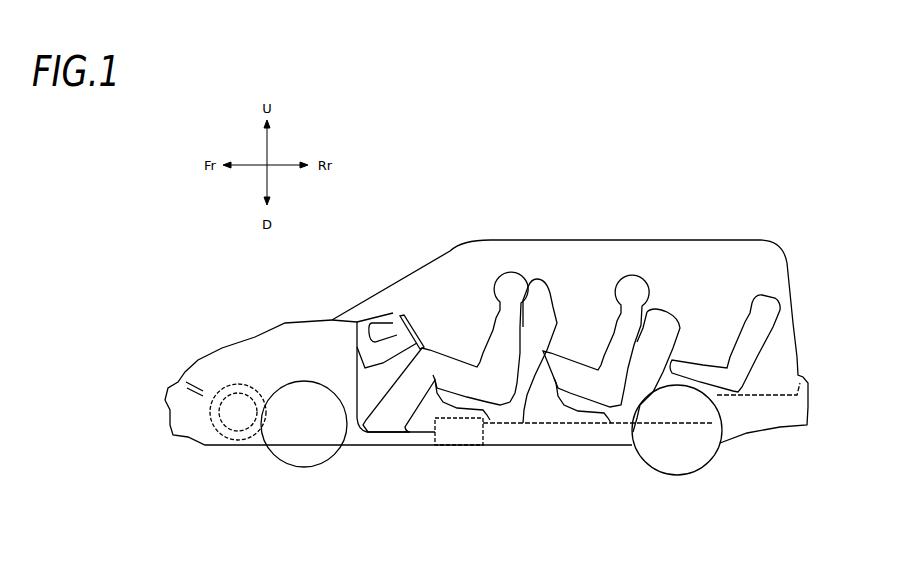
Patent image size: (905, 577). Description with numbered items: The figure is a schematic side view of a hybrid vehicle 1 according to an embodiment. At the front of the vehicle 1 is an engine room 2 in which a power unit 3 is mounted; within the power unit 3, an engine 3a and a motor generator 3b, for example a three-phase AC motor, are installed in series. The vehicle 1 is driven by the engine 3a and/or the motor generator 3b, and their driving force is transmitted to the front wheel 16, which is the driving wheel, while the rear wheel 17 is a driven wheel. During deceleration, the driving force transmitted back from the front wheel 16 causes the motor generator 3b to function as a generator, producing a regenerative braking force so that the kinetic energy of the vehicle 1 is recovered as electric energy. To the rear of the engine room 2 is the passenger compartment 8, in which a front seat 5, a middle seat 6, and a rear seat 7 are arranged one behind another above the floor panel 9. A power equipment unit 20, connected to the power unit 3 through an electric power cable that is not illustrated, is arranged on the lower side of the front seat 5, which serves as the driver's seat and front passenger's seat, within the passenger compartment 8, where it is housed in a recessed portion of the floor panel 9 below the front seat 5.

The vehicle 1 is at (548, 190).
The engine room 2 is at (180, 380).
The power unit 3 is at (226, 398).
The engine 3a is at (212, 423).
The motor generator 3b is at (239, 440).
The front seat 5 is at (515, 382).
The middle seat 6 is at (628, 403).
The rear seat 7 is at (748, 352).
The passenger compartment 8 is at (584, 290).
The floor panel 9 is at (572, 426).
The front wheel 16 is at (298, 458).
The rear wheel 17 is at (673, 456).
The power equipment unit 20 is at (453, 447).